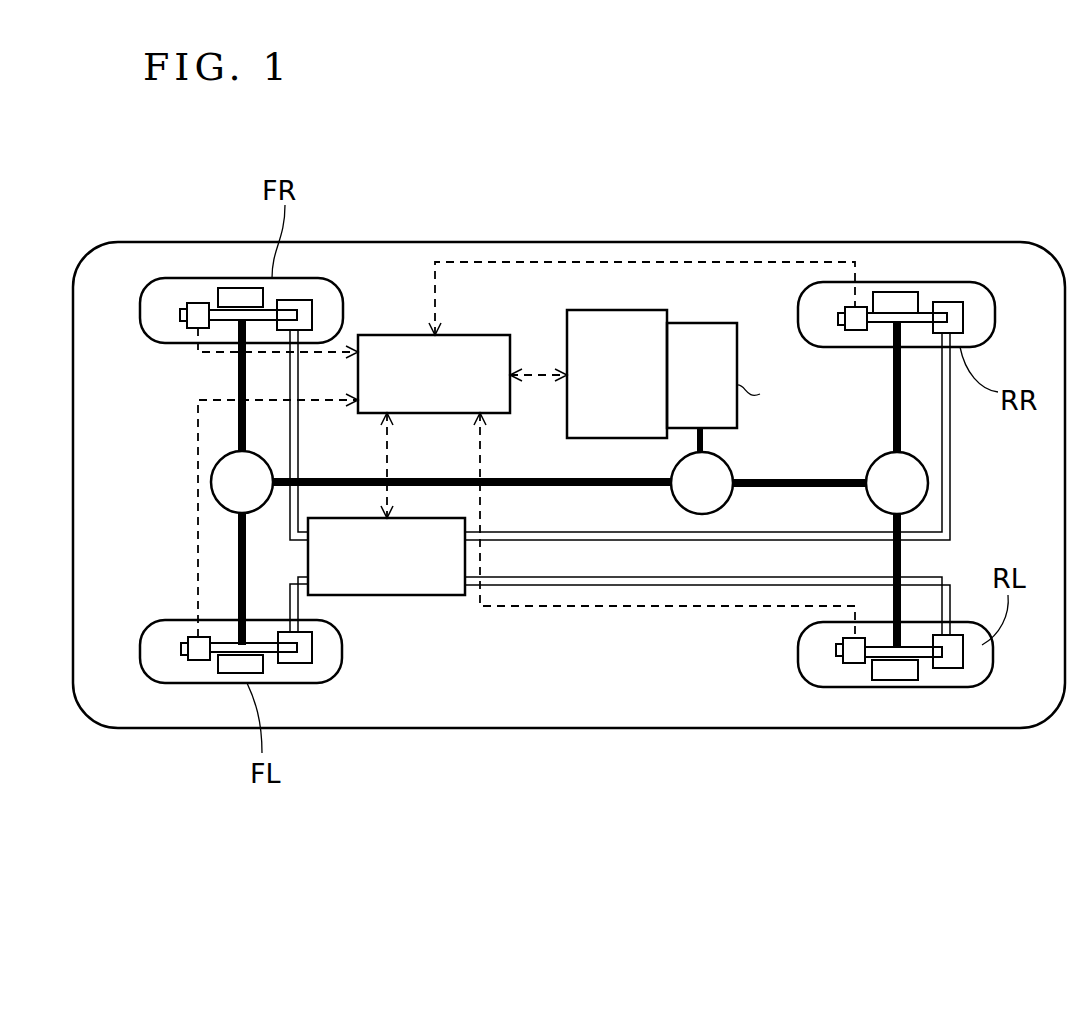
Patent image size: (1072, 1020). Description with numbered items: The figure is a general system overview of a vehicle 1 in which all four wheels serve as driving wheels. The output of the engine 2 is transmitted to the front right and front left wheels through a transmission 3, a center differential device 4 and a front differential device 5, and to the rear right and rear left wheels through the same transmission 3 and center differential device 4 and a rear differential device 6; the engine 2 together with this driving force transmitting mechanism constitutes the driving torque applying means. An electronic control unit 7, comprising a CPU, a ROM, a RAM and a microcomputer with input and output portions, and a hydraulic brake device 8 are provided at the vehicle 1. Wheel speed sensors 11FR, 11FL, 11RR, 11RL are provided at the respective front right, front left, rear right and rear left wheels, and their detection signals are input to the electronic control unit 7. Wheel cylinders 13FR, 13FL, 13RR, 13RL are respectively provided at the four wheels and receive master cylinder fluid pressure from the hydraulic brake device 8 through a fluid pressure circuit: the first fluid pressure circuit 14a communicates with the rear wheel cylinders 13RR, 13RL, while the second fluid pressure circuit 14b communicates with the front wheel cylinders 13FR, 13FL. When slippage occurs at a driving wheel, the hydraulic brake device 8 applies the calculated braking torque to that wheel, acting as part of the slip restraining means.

The vehicle 1 is at (100, 240).
The engine 2 is at (607, 310).
The transmission 3 is at (700, 323).
The center differential device 4 is at (725, 468).
The front differential device 5 is at (222, 488).
The rear differential device 6 is at (926, 481).
The electronic control unit 7 is at (470, 335).
The hydraulic brake device 8 is at (405, 595).
The wheel speed sensor 11FR is at (198, 303).
The wheel speed sensor 11FL is at (198, 662).
The wheel speed sensor 11RR is at (848, 307).
The wheel speed sensor 11RL is at (855, 667).
The wheel cylinder 13FR is at (300, 300).
The wheel cylinder 13FL is at (303, 665).
The wheel cylinder 13RR is at (957, 302).
The wheel cylinder 13RL is at (952, 670).
The first fluid pressure circuit 14a is at (612, 540).
The second fluid pressure circuit 14b is at (290, 592).